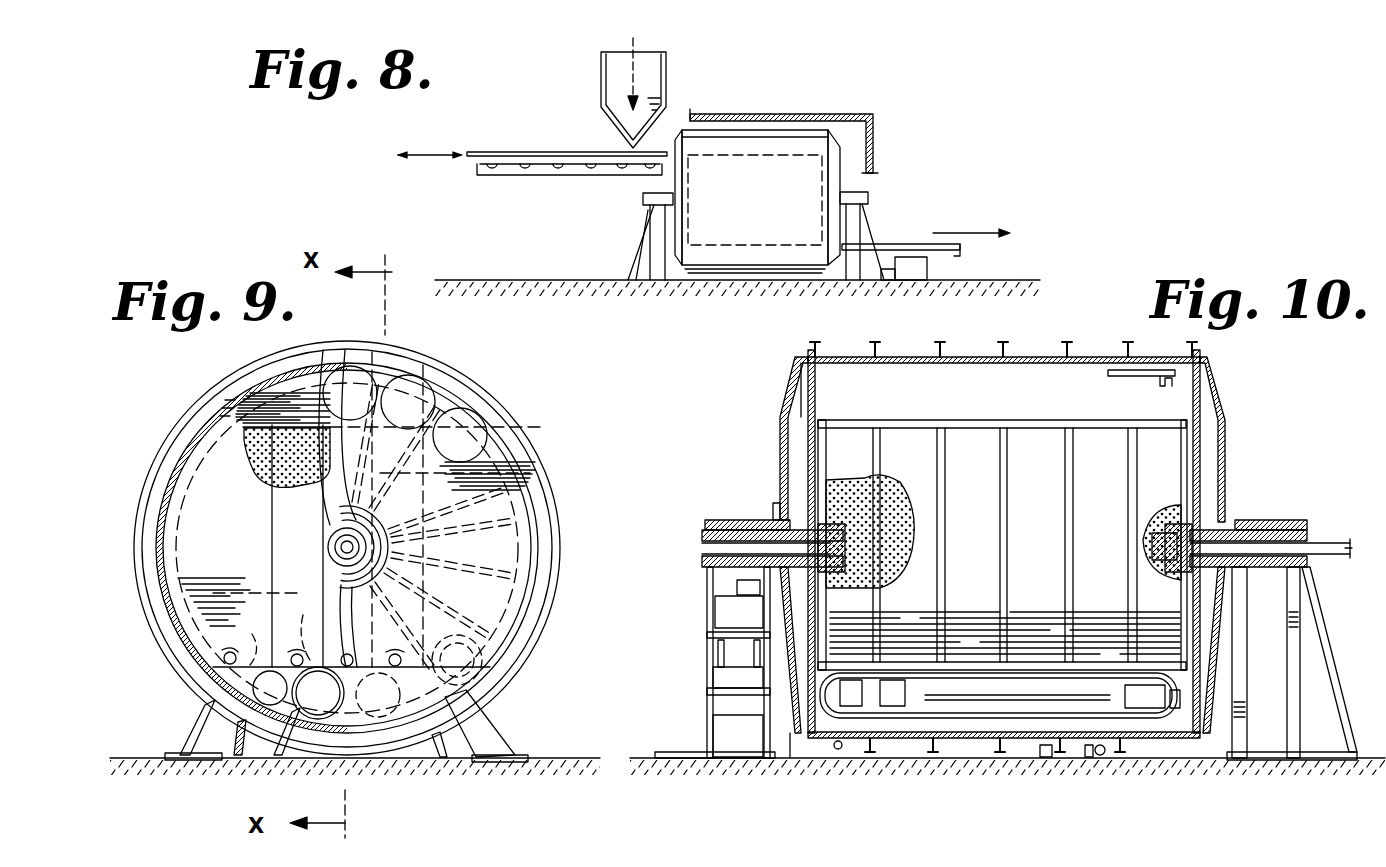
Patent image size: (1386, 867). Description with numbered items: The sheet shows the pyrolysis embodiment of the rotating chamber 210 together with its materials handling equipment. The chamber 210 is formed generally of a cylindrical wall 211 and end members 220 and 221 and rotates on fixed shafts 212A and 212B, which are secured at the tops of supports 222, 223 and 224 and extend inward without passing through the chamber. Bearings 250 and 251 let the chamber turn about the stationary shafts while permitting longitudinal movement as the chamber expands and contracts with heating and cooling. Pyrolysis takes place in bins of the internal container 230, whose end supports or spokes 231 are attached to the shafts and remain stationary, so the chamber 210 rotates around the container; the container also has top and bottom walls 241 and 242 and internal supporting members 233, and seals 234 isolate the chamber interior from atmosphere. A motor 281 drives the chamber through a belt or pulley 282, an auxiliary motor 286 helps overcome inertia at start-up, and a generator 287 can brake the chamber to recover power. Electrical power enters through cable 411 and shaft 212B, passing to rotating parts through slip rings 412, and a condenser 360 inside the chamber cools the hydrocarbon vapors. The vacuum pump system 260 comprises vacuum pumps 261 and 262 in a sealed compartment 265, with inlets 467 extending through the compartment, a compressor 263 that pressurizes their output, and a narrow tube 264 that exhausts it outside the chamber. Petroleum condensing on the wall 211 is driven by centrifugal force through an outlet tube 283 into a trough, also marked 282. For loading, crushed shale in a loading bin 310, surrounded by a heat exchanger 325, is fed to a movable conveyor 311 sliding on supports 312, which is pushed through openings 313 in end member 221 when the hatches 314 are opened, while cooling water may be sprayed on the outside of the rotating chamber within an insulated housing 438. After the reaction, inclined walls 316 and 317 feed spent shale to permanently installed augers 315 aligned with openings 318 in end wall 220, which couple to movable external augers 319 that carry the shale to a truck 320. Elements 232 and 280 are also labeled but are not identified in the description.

In FIG. 8, the chamber 210 is at (856, 160).
In FIG. 9, the chamber 210 is at (486, 371).
In FIG. 10, the chamber 210 is at (788, 345).
In FIG. 9, the cylindrical wall 211 is at (178, 455).
In FIG. 10, the cylindrical wall 211 is at (1084, 356).
In FIG. 9, the shaft 212A is at (334, 547).
In FIG. 10, the shaft 212A is at (712, 519).
In FIG. 10, the shaft 212B is at (1264, 520).
In FIG. 10, the end member 220 is at (1226, 416).
In FIG. 9, the end member 221 is at (531, 528).
In FIG. 10, the end member 221 is at (781, 447).
In FIG. 9, the support 222 is at (193, 738).
In FIG. 10, the support 222 is at (707, 722).
In FIG. 9, the support 223 is at (495, 742).
In FIG. 10, the support 223 is at (783, 760).
In FIG. 10, the support 224 is at (1293, 722).
In FIG. 8, the internal container 230 is at (789, 143).
In FIG. 9, the internal container 230 is at (167, 540).
In FIG. 10, the internal container 230 is at (1167, 414).
In FIG. 10, the end supports 231 is at (1187, 452).
In FIG. 9, the housing side wall 232 is at (529, 468).
In FIG. 10, the housing side wall 232 is at (808, 452).
In FIG. 10, the internal supporting members 233 is at (1002, 447).
In FIG. 10, the seals 234 is at (779, 504).
In FIG. 9, the top wall 241 is at (237, 418).
In FIG. 10, the top wall 241 is at (1020, 662).
In FIG. 9, the bottom wall 242 is at (303, 716).
In FIG. 10, the bottom wall 242 is at (848, 421).
In FIG. 10, the bearing 250 is at (835, 480).
In FIG. 10, the bearing 251 is at (1183, 508).
In FIG. 10, the vacuum pump system 260 is at (947, 746).
In FIG. 10, the vacuum pump 261 is at (848, 690).
In FIG. 10, the vacuum pump 262 is at (897, 690).
In FIG. 10, the compressor 263 is at (1143, 712).
In FIG. 10, the narrow tube 264 is at (1187, 600).
In FIG. 10, the sealed compartment 265 is at (1181, 720).
In FIG. 10, the drive shaft 280 is at (690, 548).
In FIG. 10, the motor 281 is at (724, 612).
In FIG. 9, the belt 282 is at (402, 760).
In FIG. 10, the belt 282 is at (738, 584).
In FIG. 10, the outlet tube 283 is at (1102, 762).
In FIG. 10, the auxiliary motor 286 is at (732, 742).
In FIG. 10, the generator 287 is at (727, 677).
In FIG. 8, the loading bin 310 is at (614, 50).
In FIG. 8, the movable conveyor 311 is at (516, 152).
In FIG. 8, the supports 312 is at (500, 174).
In FIG. 9, the openings 313 is at (417, 376).
In FIG. 9, the hatches 314 is at (463, 437).
In FIG. 9, the augers 315 is at (225, 655).
In FIG. 9, the inclined wall 316 is at (263, 630).
In FIG. 9, the inclined wall 317 is at (304, 622).
In FIG. 9, the openings 318 is at (490, 688).
In FIG. 8, the external augers 319 is at (905, 247).
In FIG. 8, the truck 320 is at (930, 262).
In FIG. 8, the heat exchanger 325 is at (668, 62).
In FIG. 10, the condenser 360 is at (1140, 376).
In FIG. 10, the cable 411 is at (1328, 542).
In FIG. 10, the slip rings 412 is at (1157, 543).
In FIG. 8, the insulated housing 438 is at (866, 112).
In FIG. 10, the inlets 467 is at (838, 752).